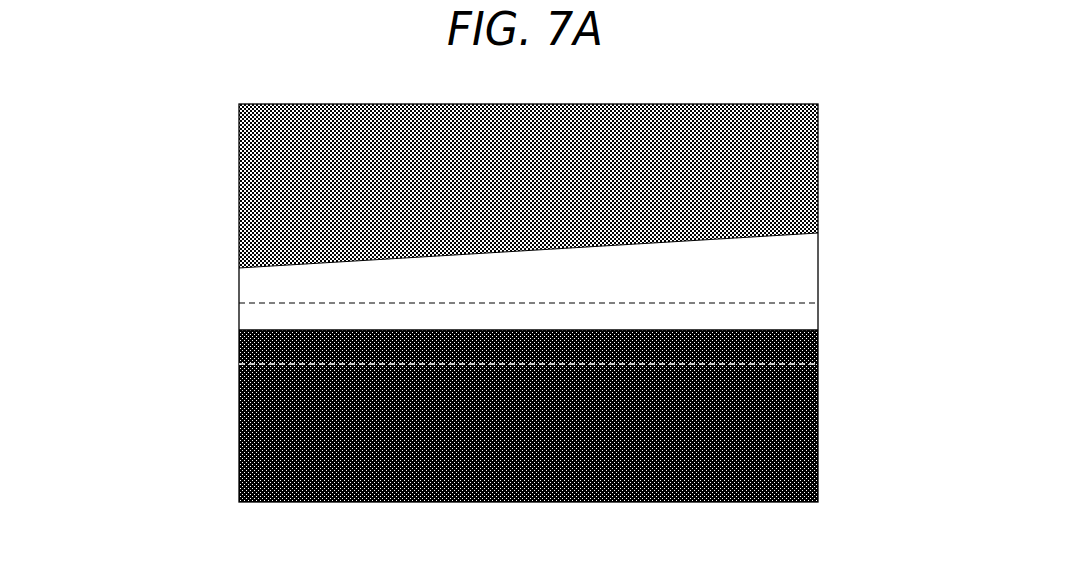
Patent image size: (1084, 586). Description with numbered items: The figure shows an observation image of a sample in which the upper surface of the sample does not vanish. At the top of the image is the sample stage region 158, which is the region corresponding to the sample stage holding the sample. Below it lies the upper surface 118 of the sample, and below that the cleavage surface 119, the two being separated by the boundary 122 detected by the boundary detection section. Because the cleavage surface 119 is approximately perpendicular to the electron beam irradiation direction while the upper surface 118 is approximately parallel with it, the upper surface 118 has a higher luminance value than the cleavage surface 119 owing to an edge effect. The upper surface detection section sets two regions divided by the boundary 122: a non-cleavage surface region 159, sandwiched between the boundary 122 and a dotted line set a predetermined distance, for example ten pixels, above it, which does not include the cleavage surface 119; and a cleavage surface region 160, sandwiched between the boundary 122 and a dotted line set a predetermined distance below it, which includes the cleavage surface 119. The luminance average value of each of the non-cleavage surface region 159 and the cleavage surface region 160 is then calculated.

The sample stage region 158 is at (240, 188).
The upper surface 118 is at (465, 281).
The boundary 122 is at (465, 308).
The cleavage surface 119 is at (465, 416).
The non-cleavage surface region 159 is at (826, 303).
The cleavage surface region 160 is at (826, 331).